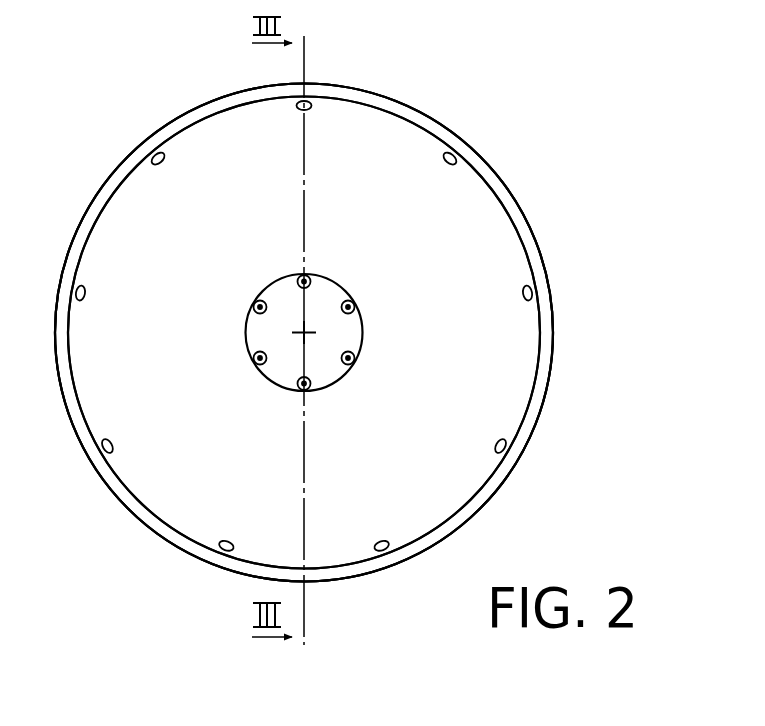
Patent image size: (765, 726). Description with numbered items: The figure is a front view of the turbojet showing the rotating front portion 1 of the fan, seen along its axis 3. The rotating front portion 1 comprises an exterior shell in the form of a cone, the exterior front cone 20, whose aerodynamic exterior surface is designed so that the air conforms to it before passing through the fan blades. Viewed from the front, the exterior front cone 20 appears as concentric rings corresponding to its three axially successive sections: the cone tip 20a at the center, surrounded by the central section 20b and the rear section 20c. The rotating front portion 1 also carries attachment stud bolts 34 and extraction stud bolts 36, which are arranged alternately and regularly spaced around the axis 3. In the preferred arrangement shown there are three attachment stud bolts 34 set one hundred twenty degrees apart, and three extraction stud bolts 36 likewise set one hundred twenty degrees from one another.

The rotating front portion 1 is at (523, 156).
The exterior front cone 20 is at (516, 482).
The cone tip 20a is at (277, 292).
The central section 20b is at (397, 143).
The rear section 20c is at (367, 98).
The axis 3 is at (303, 333).
The attachment stud bolts 34 is at (307, 279).
The extraction stud bolts 36 is at (253, 307).